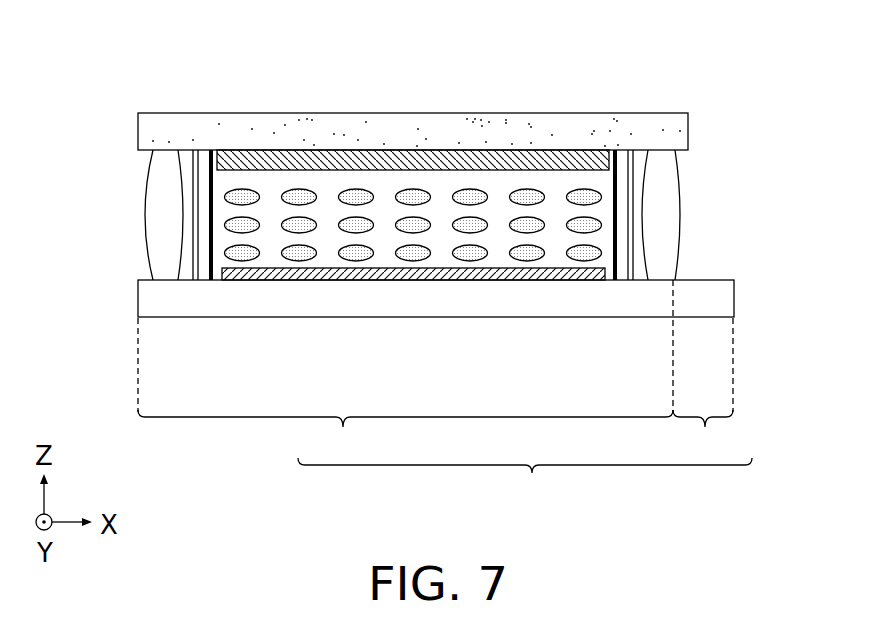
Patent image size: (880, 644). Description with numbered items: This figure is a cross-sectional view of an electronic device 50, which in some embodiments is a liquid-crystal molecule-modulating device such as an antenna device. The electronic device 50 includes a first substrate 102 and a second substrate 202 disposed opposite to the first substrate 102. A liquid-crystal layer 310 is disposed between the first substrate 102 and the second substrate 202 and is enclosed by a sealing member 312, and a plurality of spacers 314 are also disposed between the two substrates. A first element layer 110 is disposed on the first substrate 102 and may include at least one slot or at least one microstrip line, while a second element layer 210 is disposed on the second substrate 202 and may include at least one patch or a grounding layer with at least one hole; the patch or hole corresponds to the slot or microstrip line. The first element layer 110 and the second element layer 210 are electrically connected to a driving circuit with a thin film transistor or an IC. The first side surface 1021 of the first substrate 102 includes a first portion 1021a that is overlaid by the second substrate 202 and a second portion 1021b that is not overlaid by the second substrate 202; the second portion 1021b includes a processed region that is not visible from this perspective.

The electronic device 50 is at (62, 68).
The first substrate 102 is at (140, 298).
The first side surface 1021 is at (525, 483).
The first portion 1021a is at (405, 369).
The second portion 1021b is at (705, 389).
The first element layer 110 is at (419, 283).
The second substrate 202 is at (141, 131).
The second element layer 210 is at (411, 158).
The liquid-crystal layer 310 is at (597, 191).
The sealing member 312 is at (155, 183).
The spacers 314 is at (200, 218).